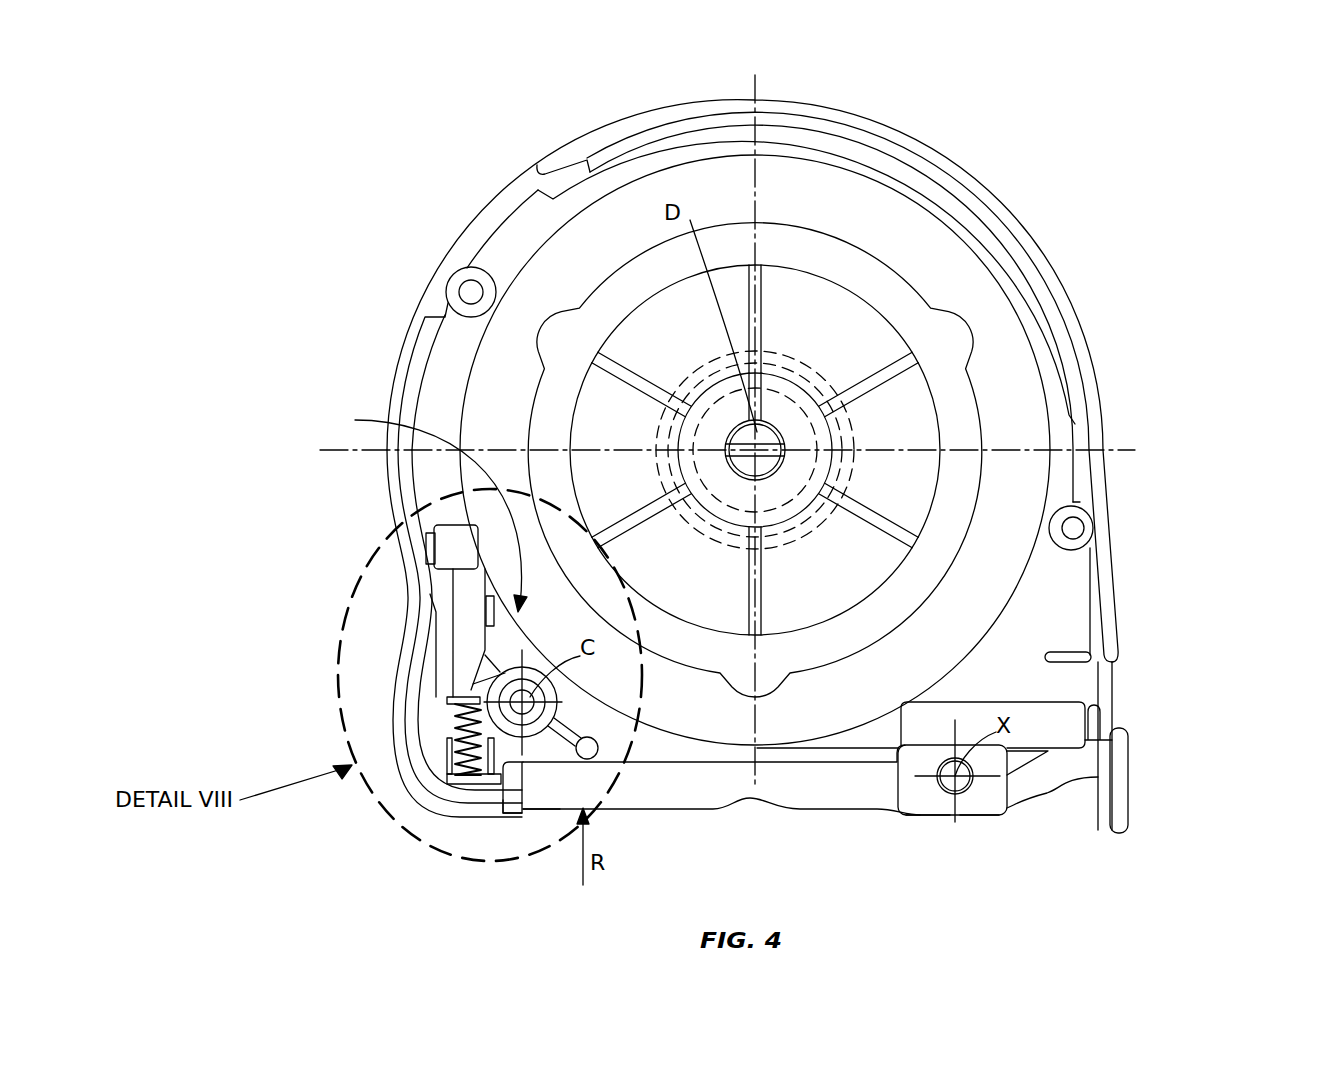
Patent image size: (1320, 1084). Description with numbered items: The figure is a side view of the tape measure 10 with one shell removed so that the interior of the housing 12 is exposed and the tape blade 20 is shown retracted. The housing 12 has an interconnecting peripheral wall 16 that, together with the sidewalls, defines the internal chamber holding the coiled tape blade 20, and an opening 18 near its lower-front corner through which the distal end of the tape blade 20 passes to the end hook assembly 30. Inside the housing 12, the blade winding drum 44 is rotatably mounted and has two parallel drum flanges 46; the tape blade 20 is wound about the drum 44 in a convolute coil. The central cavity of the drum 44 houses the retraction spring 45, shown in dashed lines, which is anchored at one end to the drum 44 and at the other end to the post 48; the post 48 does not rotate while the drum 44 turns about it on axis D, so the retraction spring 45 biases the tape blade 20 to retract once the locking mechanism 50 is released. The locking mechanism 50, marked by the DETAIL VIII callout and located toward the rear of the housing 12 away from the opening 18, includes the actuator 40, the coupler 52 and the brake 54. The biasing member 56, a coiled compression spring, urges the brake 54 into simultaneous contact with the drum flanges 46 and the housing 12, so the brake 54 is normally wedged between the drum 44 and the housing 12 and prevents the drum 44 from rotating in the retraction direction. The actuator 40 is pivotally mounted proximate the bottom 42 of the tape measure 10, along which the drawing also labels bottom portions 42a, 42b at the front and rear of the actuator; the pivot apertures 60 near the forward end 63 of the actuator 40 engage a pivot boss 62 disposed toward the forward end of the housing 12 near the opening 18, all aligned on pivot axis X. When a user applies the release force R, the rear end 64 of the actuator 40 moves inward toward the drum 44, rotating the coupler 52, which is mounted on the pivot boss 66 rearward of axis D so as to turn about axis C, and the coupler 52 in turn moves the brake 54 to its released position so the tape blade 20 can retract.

The tape measure 10 is at (303, 136).
The housing 12 is at (1085, 455).
The interconnecting peripheral wall 16 is at (467, 225).
The opening 18 is at (1112, 686).
The tape blade 20 is at (1050, 720).
The end hook assembly 30 is at (1138, 803).
The actuator 40 is at (713, 812).
The bottom 42 is at (800, 816).
The slide end portion 42a is at (1015, 815).
The slide end portion 42b is at (500, 815).
The blade winding drum 44 is at (940, 250).
The retraction spring 45 is at (870, 425).
The drum flanges 46 is at (553, 235).
The post 48 is at (765, 430).
The locking mechanism 50 is at (426, 509).
The coupler 52 is at (477, 773).
The brake 54 is at (467, 592).
The biasing member 56 is at (452, 730).
The pivot apertures 60 is at (950, 793).
The pivot boss 62 is at (938, 792).
The forward end 63 is at (1002, 812).
The rear end 64 is at (540, 820).
The pivot boss 66 is at (477, 668).